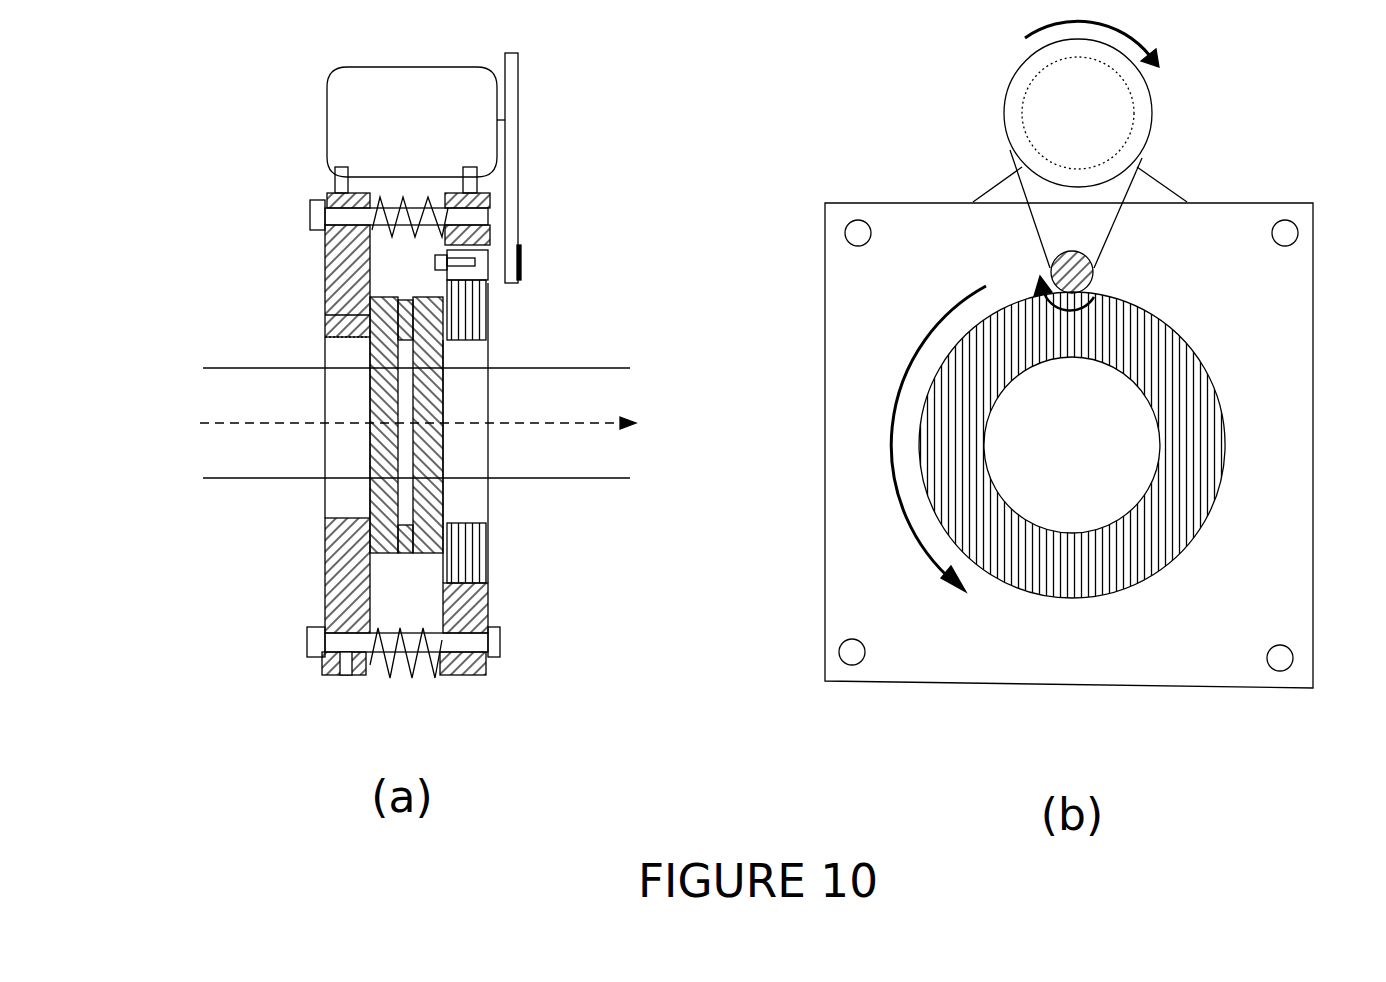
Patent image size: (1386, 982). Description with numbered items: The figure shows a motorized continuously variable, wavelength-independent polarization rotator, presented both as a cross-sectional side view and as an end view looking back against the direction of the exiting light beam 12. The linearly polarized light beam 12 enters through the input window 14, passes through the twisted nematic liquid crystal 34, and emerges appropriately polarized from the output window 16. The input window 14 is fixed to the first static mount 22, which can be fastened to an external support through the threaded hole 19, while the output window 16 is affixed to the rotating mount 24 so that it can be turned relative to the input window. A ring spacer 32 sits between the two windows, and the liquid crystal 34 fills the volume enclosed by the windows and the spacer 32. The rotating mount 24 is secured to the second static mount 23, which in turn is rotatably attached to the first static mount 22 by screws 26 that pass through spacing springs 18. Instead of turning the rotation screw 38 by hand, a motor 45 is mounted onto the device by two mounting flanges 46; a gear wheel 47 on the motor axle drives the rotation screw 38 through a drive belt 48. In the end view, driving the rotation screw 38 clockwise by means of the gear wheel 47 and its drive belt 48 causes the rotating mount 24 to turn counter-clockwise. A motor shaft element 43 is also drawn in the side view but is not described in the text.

The light beam 12 is at (212, 420).
The input window 14 is at (376, 317).
The output window 16 is at (430, 330).
The spacing spring 18 is at (410, 668).
The threaded hole 19 is at (341, 680).
The first static mount 22 is at (330, 578).
The second static mount 23 is at (490, 604).
The rotating mount 24 is at (490, 303).
The screw 26 is at (505, 648).
The ring spacer 32 is at (415, 531).
The twisted nematic liquid crystal 34 is at (410, 398).
The rotation screw 38 is at (522, 250).
The motor shaft 43 is at (436, 258).
The motor 45 is at (372, 120).
The mounting flange 46 is at (330, 178).
The gear wheel 47 is at (525, 98).
The drive belt 48 is at (522, 207).